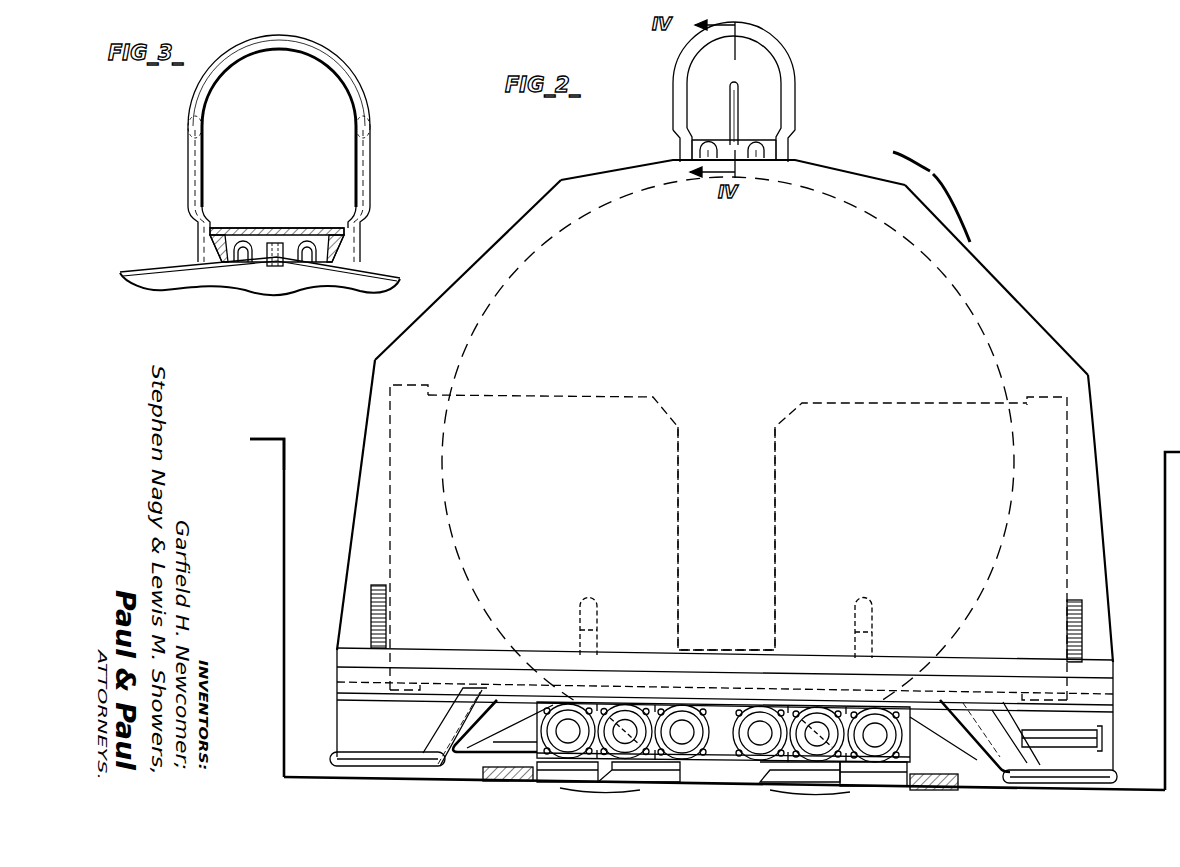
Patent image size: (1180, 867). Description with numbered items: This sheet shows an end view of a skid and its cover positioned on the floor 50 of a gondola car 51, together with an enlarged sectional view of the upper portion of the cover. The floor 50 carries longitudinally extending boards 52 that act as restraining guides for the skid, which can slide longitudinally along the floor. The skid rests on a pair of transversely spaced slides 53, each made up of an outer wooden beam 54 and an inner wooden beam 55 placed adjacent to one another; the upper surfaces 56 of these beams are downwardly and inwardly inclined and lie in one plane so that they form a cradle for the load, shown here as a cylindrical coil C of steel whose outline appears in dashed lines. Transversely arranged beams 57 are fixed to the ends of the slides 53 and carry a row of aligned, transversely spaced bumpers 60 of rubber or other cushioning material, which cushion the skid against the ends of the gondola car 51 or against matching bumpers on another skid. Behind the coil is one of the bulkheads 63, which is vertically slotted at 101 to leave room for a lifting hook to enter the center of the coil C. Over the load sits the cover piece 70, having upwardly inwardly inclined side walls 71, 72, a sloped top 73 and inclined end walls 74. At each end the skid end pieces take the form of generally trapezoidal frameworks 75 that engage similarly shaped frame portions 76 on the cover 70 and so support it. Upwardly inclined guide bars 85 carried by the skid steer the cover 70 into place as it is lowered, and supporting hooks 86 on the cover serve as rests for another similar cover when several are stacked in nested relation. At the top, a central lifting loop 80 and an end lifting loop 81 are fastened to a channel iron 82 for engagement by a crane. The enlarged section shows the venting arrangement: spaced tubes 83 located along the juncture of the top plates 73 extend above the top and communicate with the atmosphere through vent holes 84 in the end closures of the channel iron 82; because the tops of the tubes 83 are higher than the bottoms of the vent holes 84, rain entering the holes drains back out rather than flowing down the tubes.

In FIG. 2, the floor 50 is at (300, 776).
In FIG. 2, the gondola car 51 is at (265, 412).
In FIG. 2, the longitudinally extending boards 52 is at (958, 783).
In FIG. 2, the slide 53 is at (835, 791).
In FIG. 2, the outer beam 54 is at (892, 706).
In FIG. 2, the inner beam 55 is at (792, 708).
In FIG. 2, the upper surfaces 56 is at (858, 708).
In FIG. 2, the transversely arranged beams 57 is at (727, 715).
In FIG. 2, the bumpers 60 is at (721, 733).
In FIG. 2, the bulkhead 63 is at (615, 396).
In FIG. 3, the cover piece 70 is at (407, 258).
In FIG. 2, the cover piece 70 is at (936, 176).
In FIG. 2, the side wall 71 is at (1104, 487).
In FIG. 2, the side wall 72 is at (1050, 332).
In FIG. 3, the sloped top 73 is at (376, 273).
In FIG. 2, the sloped top 73 is at (876, 186).
In FIG. 2, the inclined end walls 74 is at (1100, 548).
In FIG. 2, the trapezoidal frameworks 75 is at (968, 700).
In FIG. 2, the frame portions 76 is at (990, 700).
In FIG. 2, the central lifting loop 80 is at (740, 92).
In FIG. 3, the end lifting loop 81 is at (358, 97).
In FIG. 2, the end lifting loop 81 is at (793, 93).
In FIG. 3, the channel iron 82 is at (272, 228).
In FIG. 2, the channel iron 82 is at (776, 151).
In FIG. 3, the tubes 83 is at (274, 268).
In FIG. 3, the vent holes 84 is at (307, 248).
In FIG. 2, the vent holes 84 is at (744, 146).
In FIG. 2, the guide bar 85 is at (863, 600).
In FIG. 2, the supporting hooks 86 is at (1067, 620).
In FIG. 2, the slot 101 is at (680, 460).
In FIG. 2, the cylindrical coils C is at (952, 290).